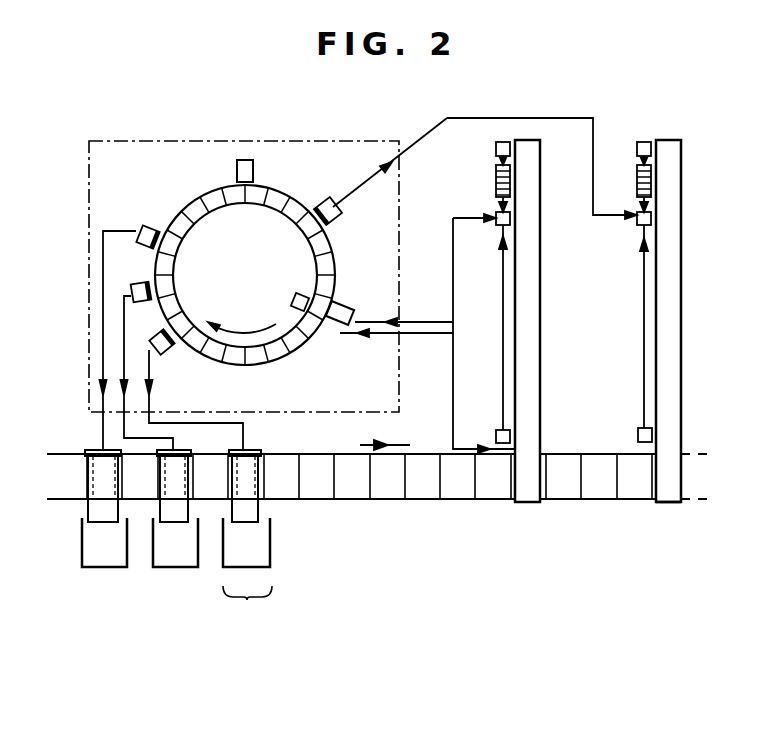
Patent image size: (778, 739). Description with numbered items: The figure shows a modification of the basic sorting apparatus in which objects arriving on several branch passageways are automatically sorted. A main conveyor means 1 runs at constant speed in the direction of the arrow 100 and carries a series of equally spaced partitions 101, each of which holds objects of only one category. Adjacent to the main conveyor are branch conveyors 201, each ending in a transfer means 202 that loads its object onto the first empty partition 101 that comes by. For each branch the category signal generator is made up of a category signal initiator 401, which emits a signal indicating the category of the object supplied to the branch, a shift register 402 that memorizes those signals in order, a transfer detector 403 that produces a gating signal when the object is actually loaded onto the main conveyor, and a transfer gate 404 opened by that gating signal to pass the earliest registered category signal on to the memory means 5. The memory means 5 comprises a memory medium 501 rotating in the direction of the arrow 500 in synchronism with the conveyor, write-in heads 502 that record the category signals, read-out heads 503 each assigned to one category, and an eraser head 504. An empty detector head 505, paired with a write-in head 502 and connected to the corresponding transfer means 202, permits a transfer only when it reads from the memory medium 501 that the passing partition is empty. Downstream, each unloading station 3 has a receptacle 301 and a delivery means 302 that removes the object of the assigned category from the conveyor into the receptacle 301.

The conveyor means 1 is at (458, 500).
The partition 101 is at (423, 487).
The arrow 100 is at (378, 444).
The unloading station 3 is at (209, 540).
The receptacle 301 is at (270, 548).
The delivery means 302 is at (258, 507).
The memory means 5 is at (298, 139).
The arrow 500 is at (240, 331).
The memory medium 501 is at (290, 170).
The write-in head 502 is at (335, 224).
The read-out head 503 is at (165, 352).
The eraser head 504 is at (246, 160).
The empty detector head 505 is at (296, 293).
The branch conveyor 201 is at (660, 262).
The transfer means 202 is at (667, 438).
The category signal initiator 401 is at (644, 141).
The shift register 402 is at (637, 172).
The transfer detector 403 is at (638, 436).
The transfer gate 404 is at (640, 221).